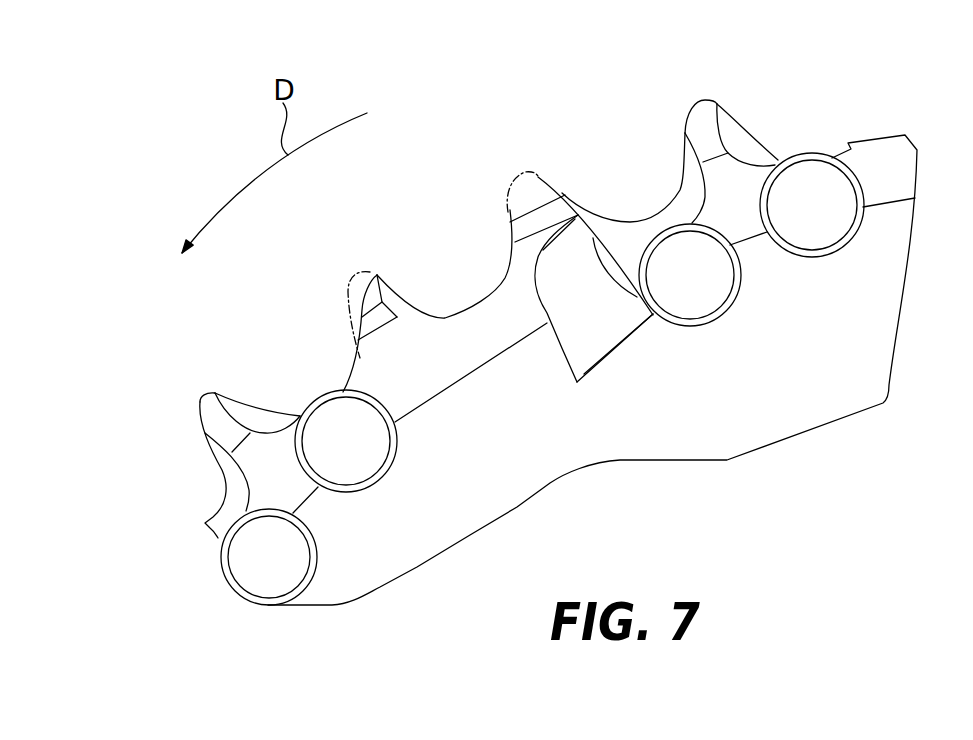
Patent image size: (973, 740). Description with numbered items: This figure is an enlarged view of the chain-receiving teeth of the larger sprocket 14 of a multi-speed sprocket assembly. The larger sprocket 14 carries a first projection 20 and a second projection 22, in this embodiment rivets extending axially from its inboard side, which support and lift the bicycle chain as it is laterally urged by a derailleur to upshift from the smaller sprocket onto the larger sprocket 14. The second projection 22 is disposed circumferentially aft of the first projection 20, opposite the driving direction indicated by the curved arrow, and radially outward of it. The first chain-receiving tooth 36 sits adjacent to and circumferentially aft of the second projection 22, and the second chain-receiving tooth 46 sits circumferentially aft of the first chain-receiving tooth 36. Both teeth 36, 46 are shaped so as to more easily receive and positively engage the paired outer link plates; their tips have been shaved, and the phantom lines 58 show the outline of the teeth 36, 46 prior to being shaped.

The larger sprocket 14 is at (884, 146).
The first projection 20 is at (238, 562).
The second projection 22 is at (332, 415).
The first chain-receiving tooth 36 is at (403, 296).
The second chain-receiving tooth 46 is at (553, 192).
The phantom lines 58 is at (363, 270).